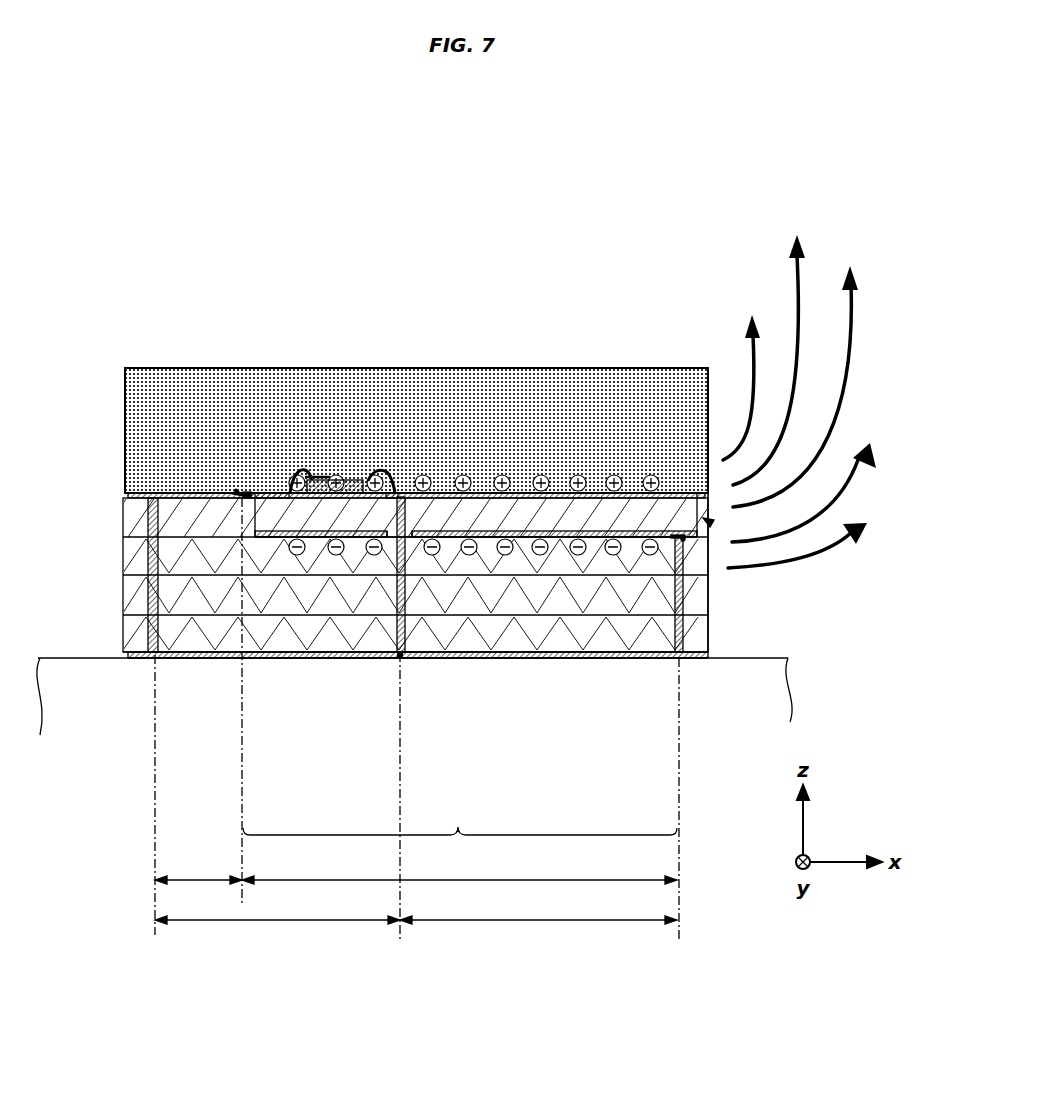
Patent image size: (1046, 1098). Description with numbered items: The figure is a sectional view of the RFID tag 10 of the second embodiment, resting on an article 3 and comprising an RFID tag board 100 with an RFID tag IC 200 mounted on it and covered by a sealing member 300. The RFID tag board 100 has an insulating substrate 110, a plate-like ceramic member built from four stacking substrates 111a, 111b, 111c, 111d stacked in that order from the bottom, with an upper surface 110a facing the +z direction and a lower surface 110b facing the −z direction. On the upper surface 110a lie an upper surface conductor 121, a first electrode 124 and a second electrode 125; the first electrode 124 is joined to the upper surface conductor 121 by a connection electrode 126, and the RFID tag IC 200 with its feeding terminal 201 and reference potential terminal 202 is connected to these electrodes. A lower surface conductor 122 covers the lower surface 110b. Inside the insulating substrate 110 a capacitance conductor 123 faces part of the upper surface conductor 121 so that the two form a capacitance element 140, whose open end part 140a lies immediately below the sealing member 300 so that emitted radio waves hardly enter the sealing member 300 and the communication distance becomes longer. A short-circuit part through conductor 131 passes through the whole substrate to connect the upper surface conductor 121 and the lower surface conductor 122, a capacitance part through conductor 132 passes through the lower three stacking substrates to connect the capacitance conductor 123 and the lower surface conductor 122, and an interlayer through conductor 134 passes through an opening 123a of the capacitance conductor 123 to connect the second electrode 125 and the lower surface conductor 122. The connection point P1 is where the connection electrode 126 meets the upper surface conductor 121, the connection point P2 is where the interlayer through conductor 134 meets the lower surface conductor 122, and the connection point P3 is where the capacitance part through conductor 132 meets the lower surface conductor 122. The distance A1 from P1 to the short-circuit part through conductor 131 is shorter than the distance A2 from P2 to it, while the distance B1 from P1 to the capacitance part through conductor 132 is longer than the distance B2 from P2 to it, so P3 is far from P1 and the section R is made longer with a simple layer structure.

The RFID tag 10 is at (268, 205).
The article 3 is at (772, 693).
The RFID tag board 100 is at (436, 554).
The insulating substrate 110 is at (396, 593).
The upper surface 110a is at (705, 497).
The lower surface 110b is at (707, 655).
The stacking substrate 111a is at (233, 640).
The stacking substrate 111b is at (232, 603).
The stacking substrate 111c is at (228, 563).
The stacking substrate 111d is at (228, 523).
The upper surface conductor 121 is at (165, 495).
The lower surface conductor 122 is at (505, 659).
The capacitance conductor 123 is at (347, 540).
The opening 123a is at (413, 540).
The first electrode 124 is at (283, 494).
The second electrode 125 is at (392, 494).
The connection electrode 126 is at (245, 494).
The short-circuit part through conductor 131 is at (150, 645).
The capacitance part through conductor 132 is at (677, 610).
The interlayer through conductor 134 is at (398, 553).
The capacitance element 140 is at (617, 262).
The open end part 140a is at (710, 523).
The RFID tag IC 200 is at (333, 482).
The feeding terminal 201 is at (299, 475).
The reference potential terminal 202 is at (358, 490).
The sealing member 300 is at (668, 387).
The connection point P1 is at (240, 494).
The connection point P2 is at (399, 657).
The connection point P3 is at (684, 541).
The section R is at (460, 849).
The distance A1 is at (198, 893).
The distance B1 is at (459, 893).
The distance A2 is at (277, 932).
The distance B2 is at (538, 932).